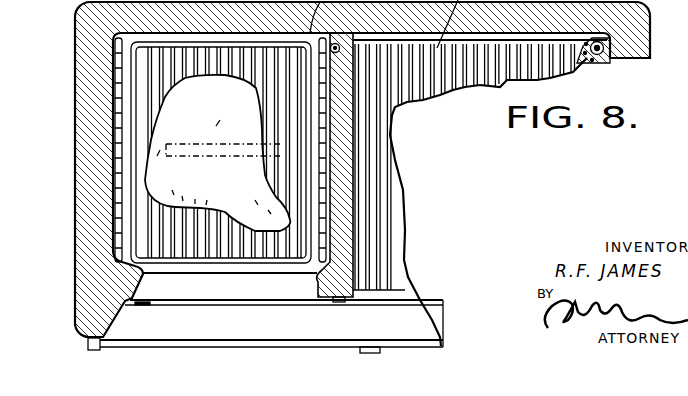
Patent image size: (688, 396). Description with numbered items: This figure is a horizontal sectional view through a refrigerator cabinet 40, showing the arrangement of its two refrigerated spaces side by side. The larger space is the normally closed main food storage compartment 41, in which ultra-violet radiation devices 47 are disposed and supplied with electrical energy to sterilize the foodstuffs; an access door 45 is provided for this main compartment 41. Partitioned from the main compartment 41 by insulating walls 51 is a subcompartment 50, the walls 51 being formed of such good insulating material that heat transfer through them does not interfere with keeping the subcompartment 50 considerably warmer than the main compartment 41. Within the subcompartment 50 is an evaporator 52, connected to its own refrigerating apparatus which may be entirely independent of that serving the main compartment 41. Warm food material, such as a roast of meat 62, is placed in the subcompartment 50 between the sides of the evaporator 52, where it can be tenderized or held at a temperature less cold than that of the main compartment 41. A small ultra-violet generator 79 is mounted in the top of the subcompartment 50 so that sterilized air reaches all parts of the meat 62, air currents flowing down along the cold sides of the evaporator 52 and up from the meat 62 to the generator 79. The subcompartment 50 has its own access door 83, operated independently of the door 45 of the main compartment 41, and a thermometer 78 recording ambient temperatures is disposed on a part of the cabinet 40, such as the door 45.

The refrigerator cabinet 40 is at (68, 142).
The food storage compartment 41 is at (405, 234).
The access door 45 is at (428, 331).
The ultra-violet radiation devices 47 is at (602, 58).
The subcompartment 50 is at (133, 64).
The insulating walls 51 is at (338, 190).
The evaporator 52 is at (120, 110).
The roast of meat 62 is at (163, 187).
The thermometer 78 is at (372, 350).
The ultra-violet generator 79 is at (211, 144).
The access door 83 is at (193, 290).